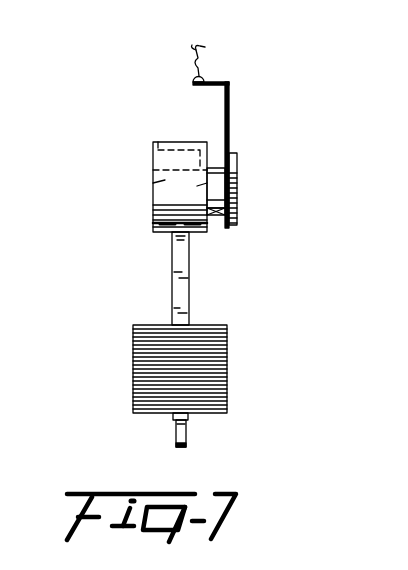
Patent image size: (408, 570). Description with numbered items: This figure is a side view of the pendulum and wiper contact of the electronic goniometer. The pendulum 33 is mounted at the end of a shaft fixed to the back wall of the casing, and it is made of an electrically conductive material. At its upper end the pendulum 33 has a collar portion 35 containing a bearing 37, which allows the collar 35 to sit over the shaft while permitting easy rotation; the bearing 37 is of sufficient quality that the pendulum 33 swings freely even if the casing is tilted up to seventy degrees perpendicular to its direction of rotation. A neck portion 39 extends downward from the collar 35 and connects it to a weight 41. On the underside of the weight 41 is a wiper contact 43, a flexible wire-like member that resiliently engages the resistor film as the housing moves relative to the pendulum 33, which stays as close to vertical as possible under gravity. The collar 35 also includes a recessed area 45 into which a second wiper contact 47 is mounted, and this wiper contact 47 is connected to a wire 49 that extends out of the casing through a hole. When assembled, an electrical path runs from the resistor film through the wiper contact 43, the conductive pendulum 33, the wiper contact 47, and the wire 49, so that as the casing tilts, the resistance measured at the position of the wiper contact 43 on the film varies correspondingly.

The pendulum 33 is at (172, 266).
The collar portion 35 is at (170, 183).
The bearing 37 is at (168, 140).
The neck portion 39 is at (189, 283).
The weight 41 is at (133, 372).
The wiper contact 43 is at (188, 437).
The recessed area 45 is at (212, 192).
The wiper contact 47 is at (228, 117).
The wire 49 is at (196, 66).